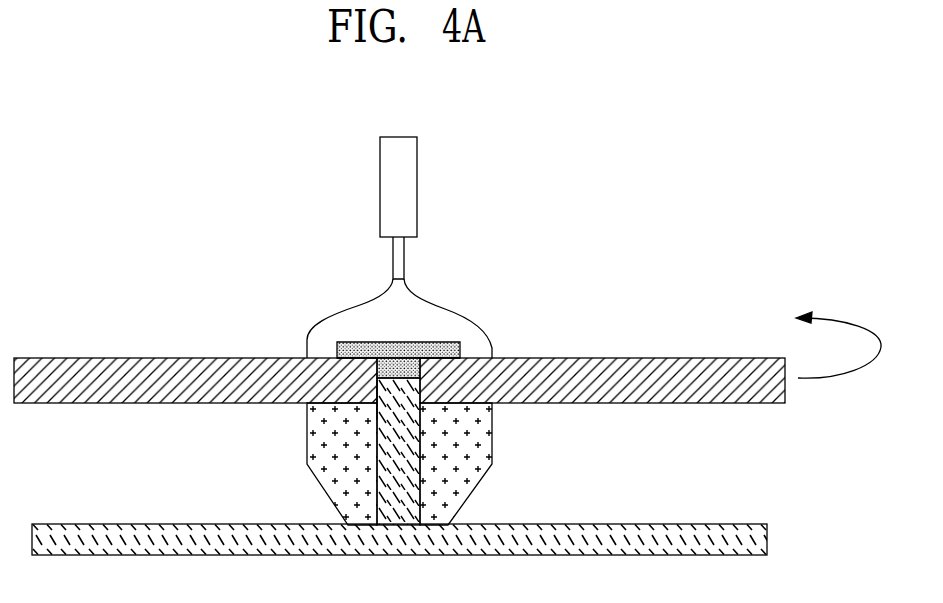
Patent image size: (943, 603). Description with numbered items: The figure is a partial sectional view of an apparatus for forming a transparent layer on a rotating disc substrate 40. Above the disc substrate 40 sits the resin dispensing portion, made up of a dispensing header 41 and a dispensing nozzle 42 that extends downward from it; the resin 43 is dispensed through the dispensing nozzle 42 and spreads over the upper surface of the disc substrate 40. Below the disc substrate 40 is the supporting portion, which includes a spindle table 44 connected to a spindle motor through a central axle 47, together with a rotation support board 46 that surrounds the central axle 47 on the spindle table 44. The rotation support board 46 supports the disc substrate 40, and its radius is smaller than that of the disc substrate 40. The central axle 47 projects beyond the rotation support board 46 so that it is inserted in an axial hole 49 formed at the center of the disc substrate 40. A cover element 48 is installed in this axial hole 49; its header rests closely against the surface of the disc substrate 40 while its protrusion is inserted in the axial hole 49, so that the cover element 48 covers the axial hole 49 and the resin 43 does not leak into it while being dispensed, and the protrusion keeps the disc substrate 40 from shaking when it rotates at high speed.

The disc substrate 40 is at (62, 372).
The dispensing header 41 is at (417, 170).
The dispensing nozzle 42 is at (404, 257).
The resin 43 is at (478, 349).
The spindle table 44 is at (767, 540).
The rotation support board 46 is at (478, 440).
The central axle 47 is at (410, 489).
The cover element 48 is at (358, 354).
The axial hole 49 is at (382, 383).